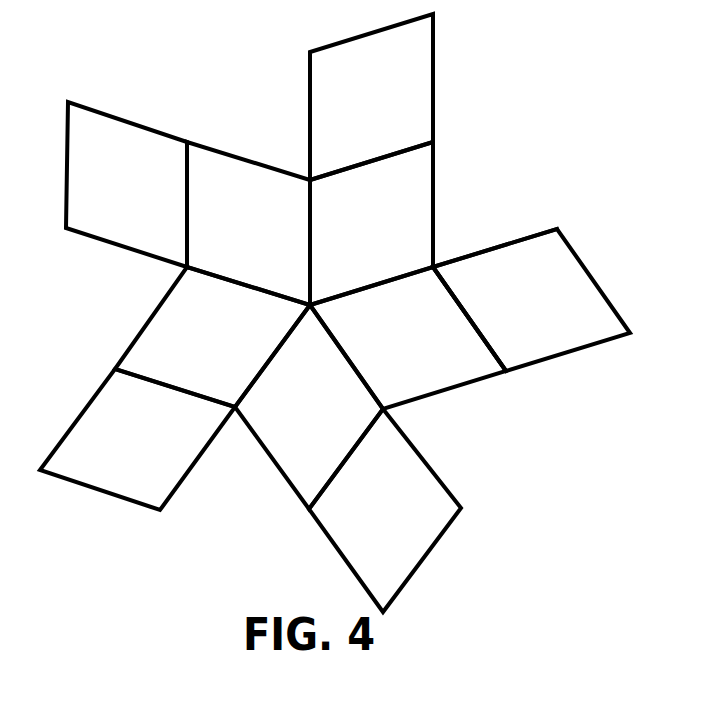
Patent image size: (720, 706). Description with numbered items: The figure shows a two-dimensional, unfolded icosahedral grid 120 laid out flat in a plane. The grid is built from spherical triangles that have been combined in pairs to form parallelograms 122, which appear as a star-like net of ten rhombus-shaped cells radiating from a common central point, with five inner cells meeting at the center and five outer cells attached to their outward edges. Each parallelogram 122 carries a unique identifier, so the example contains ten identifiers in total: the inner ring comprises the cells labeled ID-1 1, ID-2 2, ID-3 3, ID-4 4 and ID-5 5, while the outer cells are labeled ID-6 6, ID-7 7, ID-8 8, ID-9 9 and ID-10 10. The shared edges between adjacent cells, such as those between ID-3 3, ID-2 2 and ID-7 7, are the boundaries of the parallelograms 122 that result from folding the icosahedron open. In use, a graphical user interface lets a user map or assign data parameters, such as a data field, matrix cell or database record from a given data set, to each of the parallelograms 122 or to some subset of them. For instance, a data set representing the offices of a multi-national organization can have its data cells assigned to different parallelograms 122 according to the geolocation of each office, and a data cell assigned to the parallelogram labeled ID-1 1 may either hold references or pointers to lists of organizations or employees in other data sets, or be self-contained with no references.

The icosahedral grid 120 is at (335, 313).
The parallelogram 122 is at (453, 262).
The ID-1 parallelogram 1 is at (309, 407).
The ID-2 parallelogram 2 is at (408, 338).
The ID-3 parallelogram 3 is at (371, 223).
The ID-4 parallelogram 4 is at (248, 223).
The ID-5 parallelogram 5 is at (212, 337).
The ID-6 parallelogram 6 is at (385, 510).
The ID-7 parallelogram 7 is at (531, 300).
The ID-8 parallelogram 8 is at (371, 97).
The ID-9 parallelogram 9 is at (126, 184).
The ID-10 parallelogram 10 is at (137, 439).